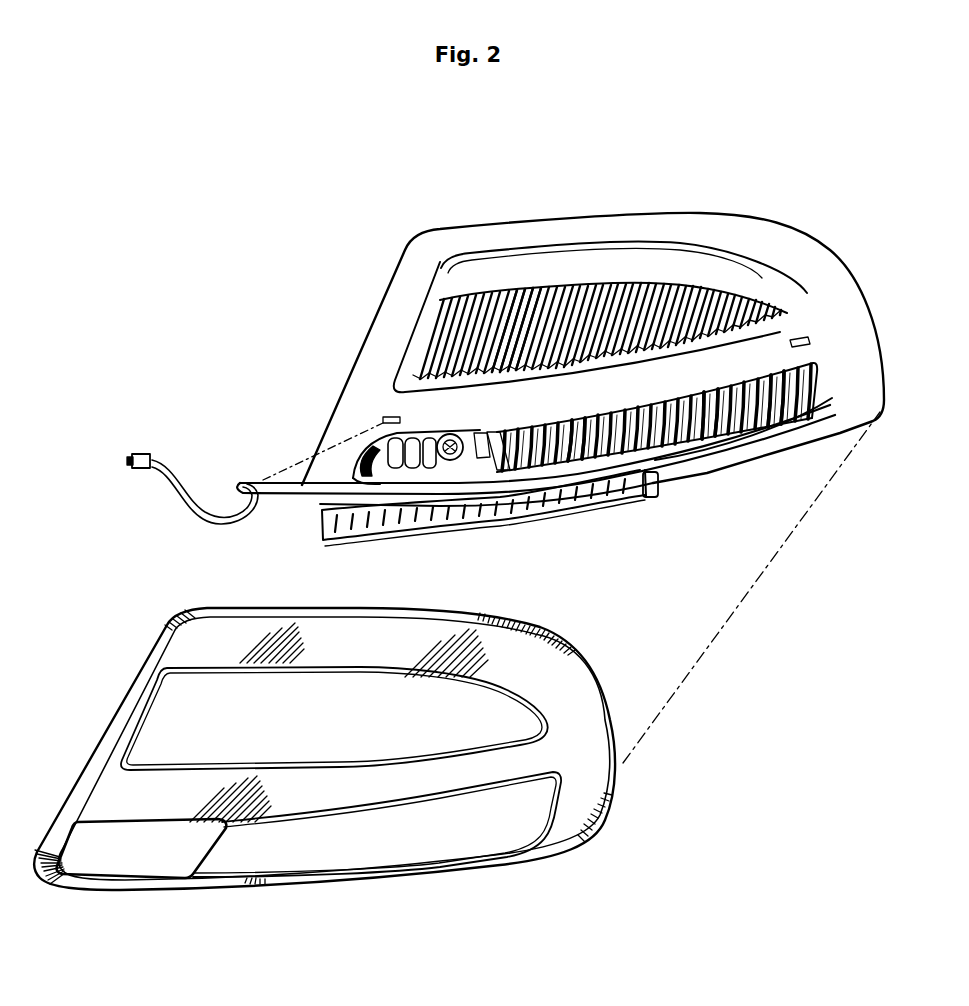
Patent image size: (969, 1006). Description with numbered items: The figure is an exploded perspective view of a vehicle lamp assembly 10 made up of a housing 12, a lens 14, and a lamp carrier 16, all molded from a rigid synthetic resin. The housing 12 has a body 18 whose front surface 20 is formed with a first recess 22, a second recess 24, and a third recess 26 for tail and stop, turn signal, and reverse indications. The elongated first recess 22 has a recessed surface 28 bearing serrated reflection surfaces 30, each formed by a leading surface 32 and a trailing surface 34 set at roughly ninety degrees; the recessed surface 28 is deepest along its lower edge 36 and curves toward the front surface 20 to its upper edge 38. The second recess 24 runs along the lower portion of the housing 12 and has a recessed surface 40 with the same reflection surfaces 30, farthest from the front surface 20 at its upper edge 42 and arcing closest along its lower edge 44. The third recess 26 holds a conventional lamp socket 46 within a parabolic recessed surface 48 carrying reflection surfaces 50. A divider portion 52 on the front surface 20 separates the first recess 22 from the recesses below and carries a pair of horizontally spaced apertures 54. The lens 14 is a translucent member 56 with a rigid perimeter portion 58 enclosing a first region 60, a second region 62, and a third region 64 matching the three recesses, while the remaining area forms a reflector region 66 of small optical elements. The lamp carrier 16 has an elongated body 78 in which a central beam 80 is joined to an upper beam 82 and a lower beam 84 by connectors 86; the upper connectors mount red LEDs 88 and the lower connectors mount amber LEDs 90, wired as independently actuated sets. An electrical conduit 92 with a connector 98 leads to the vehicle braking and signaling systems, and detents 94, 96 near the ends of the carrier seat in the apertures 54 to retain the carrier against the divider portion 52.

The vehicle lamp assembly 10 is at (248, 309).
The housing 12 is at (378, 301).
The lens 14 is at (128, 681).
The lamp carrier 16 is at (240, 470).
The body 18 is at (635, 215).
The surface 20 is at (378, 343).
The first recess 22 is at (440, 300).
The second recess 24 is at (487, 432).
The third recess 26 is at (352, 452).
The recessed surface 28 is at (623, 313).
The reflection surfaces 30 is at (537, 283).
The leading surface 32 is at (585, 320).
The trailing surface 34 is at (568, 318).
The lower edge 36 is at (747, 310).
The upper edge 38 is at (707, 290).
The recessed surface 40 is at (790, 390).
The upper edge 42 is at (773, 363).
The lower edge 44 is at (743, 440).
The lamp socket 46 is at (452, 460).
The parabolic recessed surface 48 is at (430, 457).
The reflection surfaces 50 is at (393, 448).
The divider portion 52 is at (807, 293).
The apertures 54 is at (813, 337).
The translucent member 56 is at (585, 660).
The perimeter portion 58 is at (88, 793).
The first region 60 is at (311, 732).
The second region 62 is at (361, 852).
The third region 64 is at (146, 862).
The reflector region 66 is at (585, 712).
The elongated body 78 is at (652, 508).
The central beam 80 is at (698, 457).
The upper beam 82 is at (330, 487).
The lower beam 84 is at (630, 507).
The connectors 86 is at (540, 534).
The red-colored LED 88 is at (617, 422).
The amber-colored LED 90 is at (658, 488).
The electrical conduit 92 is at (163, 457).
The detents 94 is at (712, 450).
The detent 96 is at (263, 480).
The connector 98 is at (140, 470).